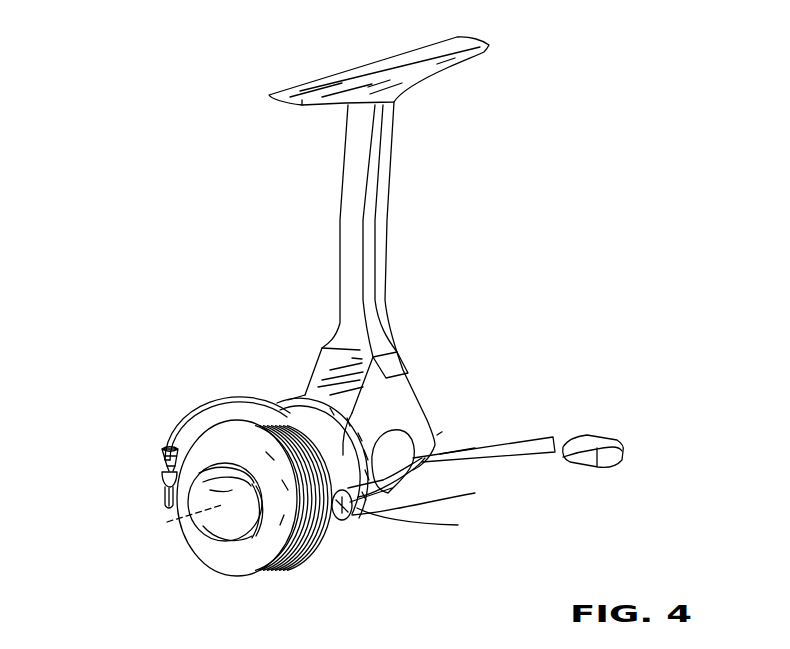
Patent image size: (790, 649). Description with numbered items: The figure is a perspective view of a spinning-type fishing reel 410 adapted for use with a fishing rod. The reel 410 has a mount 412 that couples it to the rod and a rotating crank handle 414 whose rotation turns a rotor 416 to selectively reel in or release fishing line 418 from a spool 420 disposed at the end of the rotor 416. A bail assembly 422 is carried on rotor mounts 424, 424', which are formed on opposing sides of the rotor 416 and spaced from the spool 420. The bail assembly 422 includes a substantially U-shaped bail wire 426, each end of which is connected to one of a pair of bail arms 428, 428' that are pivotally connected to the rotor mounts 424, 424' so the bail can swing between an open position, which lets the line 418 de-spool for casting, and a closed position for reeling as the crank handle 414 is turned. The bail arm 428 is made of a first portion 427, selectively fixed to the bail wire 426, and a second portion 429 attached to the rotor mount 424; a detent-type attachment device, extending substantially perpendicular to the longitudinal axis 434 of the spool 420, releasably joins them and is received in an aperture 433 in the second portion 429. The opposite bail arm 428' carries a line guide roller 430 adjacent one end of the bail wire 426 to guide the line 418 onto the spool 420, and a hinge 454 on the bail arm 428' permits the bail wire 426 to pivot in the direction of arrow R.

The spinning-type fishing reel 410 is at (583, 104).
The mount 412 is at (385, 158).
The crank handle 414 is at (597, 446).
The rotor 416 is at (377, 407).
The fishing line 418 is at (297, 562).
The spool 420 is at (279, 580).
The bail assembly 422 is at (219, 390).
The rotor mount 424 is at (390, 474).
The rotor mount 424' is at (306, 426).
The bail wire 426 is at (197, 413).
The first portion 427 is at (340, 529).
The bail arm 428 is at (441, 467).
The bail arm 428' is at (134, 519).
The second portion 429 is at (372, 514).
The line guide roller 430 is at (162, 452).
The aperture 433 is at (352, 522).
The longitudinal axis 434 is at (477, 427).
The hinge 454 is at (163, 487).